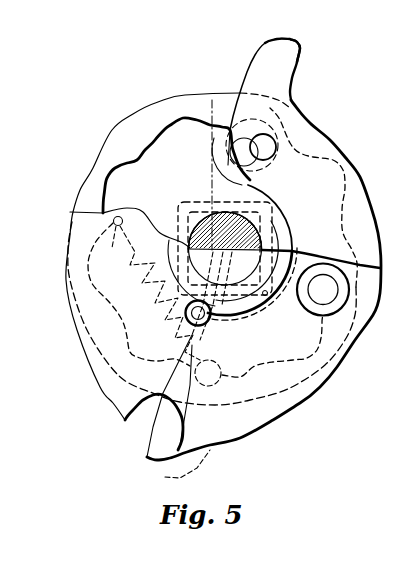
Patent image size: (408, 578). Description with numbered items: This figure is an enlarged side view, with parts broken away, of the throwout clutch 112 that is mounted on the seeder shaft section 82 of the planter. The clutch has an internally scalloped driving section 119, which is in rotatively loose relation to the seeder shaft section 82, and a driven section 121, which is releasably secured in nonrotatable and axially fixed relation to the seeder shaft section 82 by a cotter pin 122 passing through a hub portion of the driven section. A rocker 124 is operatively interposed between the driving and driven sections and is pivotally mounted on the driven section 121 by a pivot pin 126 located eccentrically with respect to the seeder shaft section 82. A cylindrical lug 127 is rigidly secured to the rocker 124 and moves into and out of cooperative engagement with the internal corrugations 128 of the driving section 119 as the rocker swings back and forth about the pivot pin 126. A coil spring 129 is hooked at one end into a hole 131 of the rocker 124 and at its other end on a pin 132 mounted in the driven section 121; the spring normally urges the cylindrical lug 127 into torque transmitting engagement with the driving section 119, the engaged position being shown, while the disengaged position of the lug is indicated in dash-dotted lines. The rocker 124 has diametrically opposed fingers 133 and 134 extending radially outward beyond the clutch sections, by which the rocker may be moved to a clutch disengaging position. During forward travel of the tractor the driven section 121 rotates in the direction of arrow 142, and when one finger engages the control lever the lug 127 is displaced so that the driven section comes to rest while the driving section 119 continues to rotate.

The seeder shaft section 82 is at (207, 203).
The throwout clutch 112 is at (398, 153).
The driving section 119 is at (138, 125).
The driven section 121 is at (88, 362).
The cotter pin 122 is at (207, 322).
The rocker 124 is at (245, 88).
The pivot pin 126 is at (322, 291).
The cylindrical lug 127 is at (279, 166).
The internal corrugations 128 is at (106, 178).
The coil spring 129 is at (173, 333).
The hole 131 is at (217, 364).
The pin 132 is at (116, 232).
The finger 133 is at (301, 47).
The finger 134 is at (150, 460).
The arrow 142 is at (192, 141).